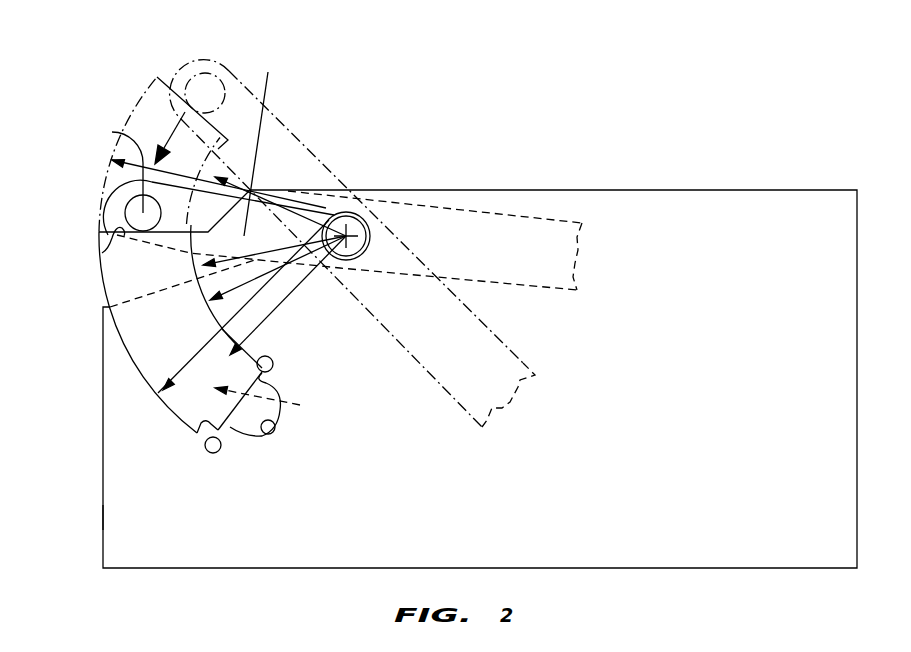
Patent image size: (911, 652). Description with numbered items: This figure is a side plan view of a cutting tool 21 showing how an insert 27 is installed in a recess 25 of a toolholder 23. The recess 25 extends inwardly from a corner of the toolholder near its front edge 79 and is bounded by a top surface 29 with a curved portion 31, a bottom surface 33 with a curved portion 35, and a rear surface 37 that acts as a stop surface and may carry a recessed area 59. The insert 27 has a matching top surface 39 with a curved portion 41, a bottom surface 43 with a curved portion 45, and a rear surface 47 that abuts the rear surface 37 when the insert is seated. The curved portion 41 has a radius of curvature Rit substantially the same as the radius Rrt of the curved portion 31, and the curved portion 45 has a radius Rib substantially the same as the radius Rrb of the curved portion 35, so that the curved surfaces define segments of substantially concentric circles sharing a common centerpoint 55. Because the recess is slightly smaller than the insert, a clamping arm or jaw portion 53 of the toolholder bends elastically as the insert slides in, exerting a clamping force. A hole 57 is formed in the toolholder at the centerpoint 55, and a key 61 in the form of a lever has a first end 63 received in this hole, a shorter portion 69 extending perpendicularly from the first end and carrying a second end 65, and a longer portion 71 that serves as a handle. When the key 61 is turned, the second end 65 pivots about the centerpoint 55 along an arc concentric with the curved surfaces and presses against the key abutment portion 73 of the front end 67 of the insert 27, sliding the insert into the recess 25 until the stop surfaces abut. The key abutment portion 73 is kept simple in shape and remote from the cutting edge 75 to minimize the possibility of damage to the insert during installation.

The cutting tool 21 is at (547, 162).
The toolholder 23 is at (754, 221).
The recess 25 is at (270, 401).
The insert 27 is at (236, 352).
The top surface of the recess 29 is at (181, 267).
The curved portion of the recess top surface 31 is at (197, 290).
The bottom surface of the recess 33 is at (140, 341).
The curved portion of the recess bottom surface 35 is at (200, 353).
The rear surface of the recess 37 is at (199, 431).
The top surface of the insert 39 is at (235, 258).
The curved portion of the insert top surface 41 is at (222, 318).
The bottom surface of the insert 43 is at (133, 399).
The curved portion of the insert bottom surface 45 is at (168, 410).
The rear surface of the insert 47 is at (265, 373).
The clamping arm or jaw portion 53 is at (268, 72).
The centerpoint 55 is at (347, 233).
The hole 57 is at (346, 212).
The recessed area 59 is at (280, 422).
The key 61 is at (558, 222).
The first end of the key 63 is at (370, 237).
The second end of the key 65 is at (112, 132).
The front end of the insert 67 is at (102, 220).
The shorter portion of the key 69 is at (240, 75).
The longer portion of the key 71 is at (452, 392).
The key abutment portion 73 is at (100, 255).
The cutting edge 75 is at (95, 241).
The front edge of the toolholder 79 is at (103, 518).
The radius of curvature of the insert bottom curved portion Rib is at (307, 216).
The radius of curvature of the insert top curved portion Rit is at (325, 221).
The radius of curvature of the recess top curved portion Rrt is at (278, 270).
The radius of curvature of the recess bottom curved portion Rrb is at (272, 298).